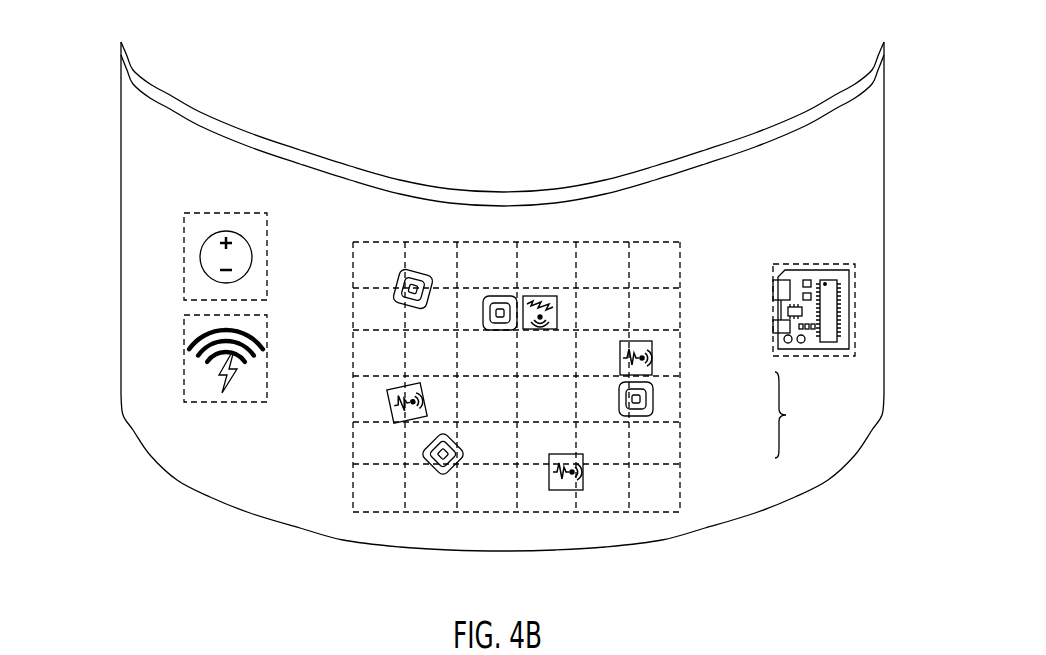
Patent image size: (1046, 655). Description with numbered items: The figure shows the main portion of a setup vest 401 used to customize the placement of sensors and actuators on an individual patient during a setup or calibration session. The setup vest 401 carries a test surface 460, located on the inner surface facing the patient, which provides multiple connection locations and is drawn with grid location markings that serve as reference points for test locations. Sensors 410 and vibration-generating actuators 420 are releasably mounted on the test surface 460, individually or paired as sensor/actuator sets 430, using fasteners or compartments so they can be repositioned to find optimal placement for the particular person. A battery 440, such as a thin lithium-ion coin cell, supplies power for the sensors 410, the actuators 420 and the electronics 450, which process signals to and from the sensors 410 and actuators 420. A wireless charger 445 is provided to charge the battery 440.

The setup vest 401 is at (263, 88).
The sensors 410 is at (398, 283).
The actuators 420 is at (392, 410).
The sensor/actuator sets 430 is at (801, 415).
The battery 440 is at (184, 250).
The wireless charger 445 is at (184, 352).
The electronics 450 is at (850, 313).
The test surface 460 is at (607, 512).